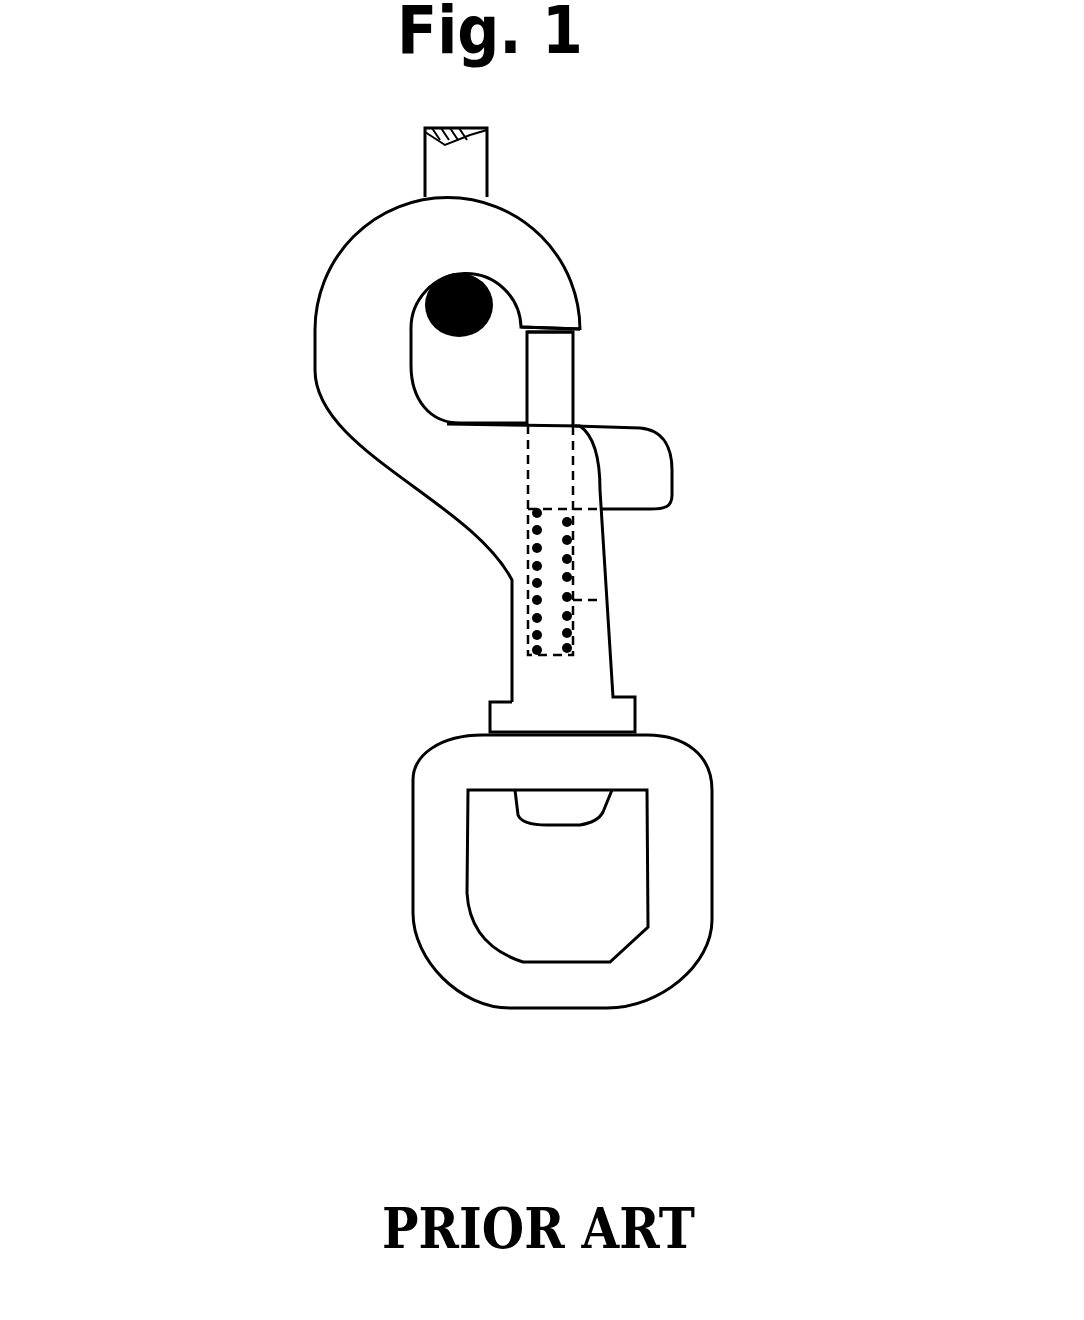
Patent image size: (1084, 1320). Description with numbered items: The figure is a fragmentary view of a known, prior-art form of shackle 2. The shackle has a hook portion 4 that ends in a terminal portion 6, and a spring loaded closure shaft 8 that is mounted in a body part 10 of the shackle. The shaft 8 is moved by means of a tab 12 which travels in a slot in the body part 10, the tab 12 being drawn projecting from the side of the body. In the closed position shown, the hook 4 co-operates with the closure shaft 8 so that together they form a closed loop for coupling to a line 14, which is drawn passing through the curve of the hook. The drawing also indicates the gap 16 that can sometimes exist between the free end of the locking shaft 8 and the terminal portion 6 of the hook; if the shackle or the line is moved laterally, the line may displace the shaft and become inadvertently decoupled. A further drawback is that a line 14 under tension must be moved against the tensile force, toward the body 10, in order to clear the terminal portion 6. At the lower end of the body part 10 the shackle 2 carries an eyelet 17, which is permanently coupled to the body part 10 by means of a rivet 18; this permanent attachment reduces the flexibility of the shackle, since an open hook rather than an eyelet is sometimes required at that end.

The shackle 2 is at (235, 263).
The hook portion 4 is at (378, 245).
The terminal portion 6 is at (563, 307).
The spring loaded closure shaft 8 is at (582, 397).
The body part 10 is at (510, 578).
The tab 12 is at (655, 492).
The line 14 is at (503, 287).
The gap 16 is at (583, 330).
The eyelet 17 is at (452, 845).
The rivet 18 is at (603, 812).